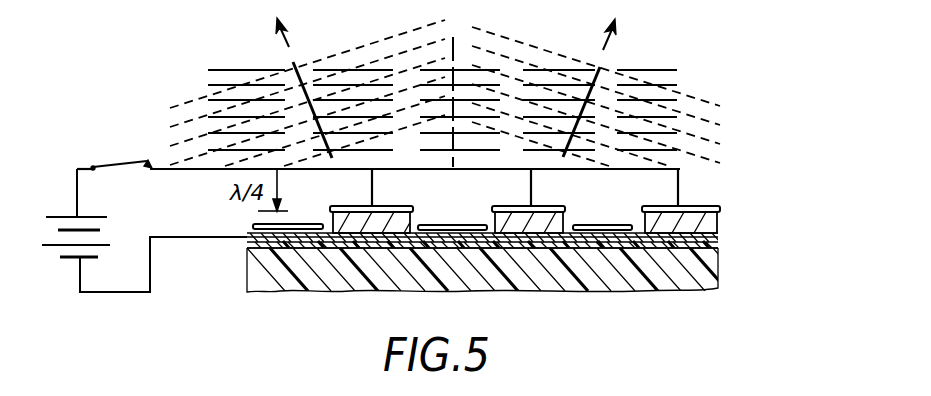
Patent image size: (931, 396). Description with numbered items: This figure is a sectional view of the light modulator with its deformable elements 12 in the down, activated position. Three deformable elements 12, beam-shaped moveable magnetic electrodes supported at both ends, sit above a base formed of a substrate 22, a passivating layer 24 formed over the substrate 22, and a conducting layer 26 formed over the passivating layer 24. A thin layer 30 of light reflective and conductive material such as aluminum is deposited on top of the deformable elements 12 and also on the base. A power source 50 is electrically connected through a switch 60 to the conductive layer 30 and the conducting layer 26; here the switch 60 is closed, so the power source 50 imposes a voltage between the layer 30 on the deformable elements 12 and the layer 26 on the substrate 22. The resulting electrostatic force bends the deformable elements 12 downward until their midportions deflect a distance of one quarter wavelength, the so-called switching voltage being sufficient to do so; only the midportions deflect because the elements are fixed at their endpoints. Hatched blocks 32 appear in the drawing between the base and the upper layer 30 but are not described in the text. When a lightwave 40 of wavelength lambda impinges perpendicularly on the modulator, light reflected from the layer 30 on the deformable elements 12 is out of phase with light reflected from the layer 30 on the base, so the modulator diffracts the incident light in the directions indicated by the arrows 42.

The deformable elements 12 is at (720, 226).
The substrate 22 is at (718, 268).
The passivating layer 24 is at (718, 245).
The conducting layer 26 is at (720, 233).
The thin layer of light reflective and conductive material 30 is at (693, 205).
The dielectric pillar 32 is at (586, 224).
The lightwave 40 is at (695, 88).
The arrows 42 is at (289, 44).
The power source 50 is at (68, 267).
The switch 60 is at (118, 162).